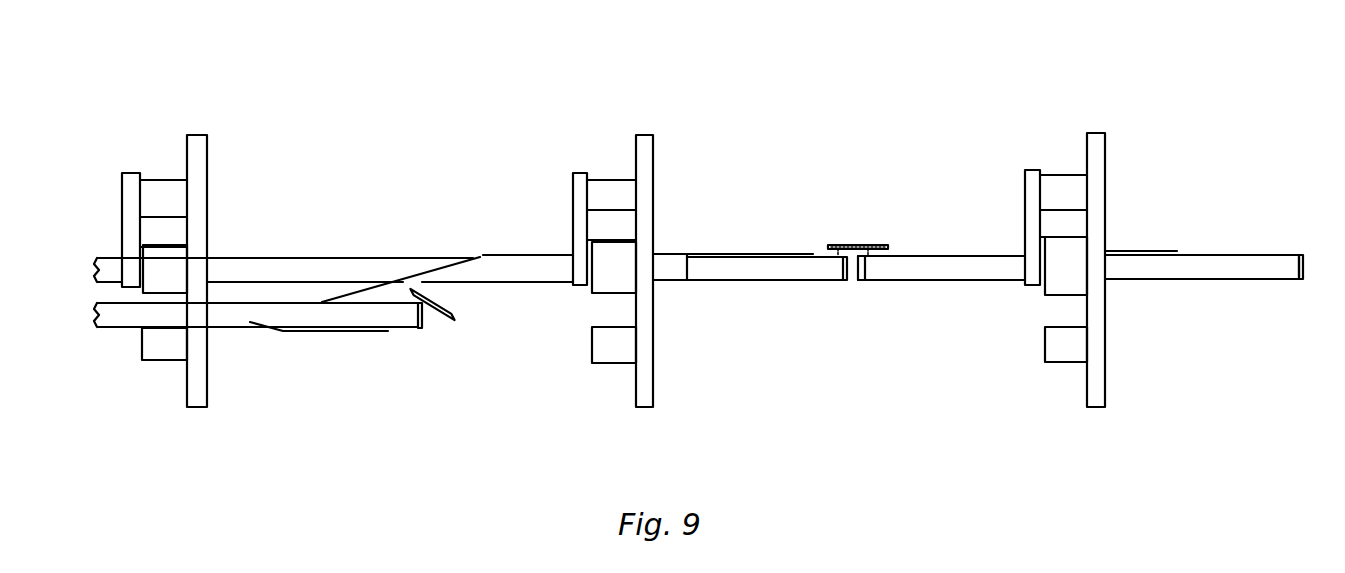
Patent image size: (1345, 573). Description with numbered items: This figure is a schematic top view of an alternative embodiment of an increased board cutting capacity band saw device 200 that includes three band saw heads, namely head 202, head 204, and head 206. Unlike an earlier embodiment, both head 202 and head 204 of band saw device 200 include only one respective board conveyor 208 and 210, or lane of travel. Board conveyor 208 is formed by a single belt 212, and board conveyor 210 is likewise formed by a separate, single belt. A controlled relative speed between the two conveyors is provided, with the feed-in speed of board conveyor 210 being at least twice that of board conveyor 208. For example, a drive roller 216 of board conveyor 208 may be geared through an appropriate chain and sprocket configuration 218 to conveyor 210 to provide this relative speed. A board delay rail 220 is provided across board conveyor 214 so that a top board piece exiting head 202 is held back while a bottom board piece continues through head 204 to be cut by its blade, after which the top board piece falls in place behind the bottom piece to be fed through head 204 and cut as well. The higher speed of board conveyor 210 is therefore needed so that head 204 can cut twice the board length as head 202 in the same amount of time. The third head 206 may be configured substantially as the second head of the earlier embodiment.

The band saw device 200 is at (1106, 74).
The band saw head 202 is at (1096, 407).
The band saw head 204 is at (645, 407).
The band saw head 206 is at (197, 407).
The board conveyor 208 is at (1297, 290).
The board conveyor 210 is at (834, 290).
The belt 212 is at (1084, 271).
The board conveyor 214 is at (764, 319).
The drive roller 216 is at (873, 291).
The chain and sprocket configuration 218 is at (862, 234).
The board delay rail 220 is at (684, 283).